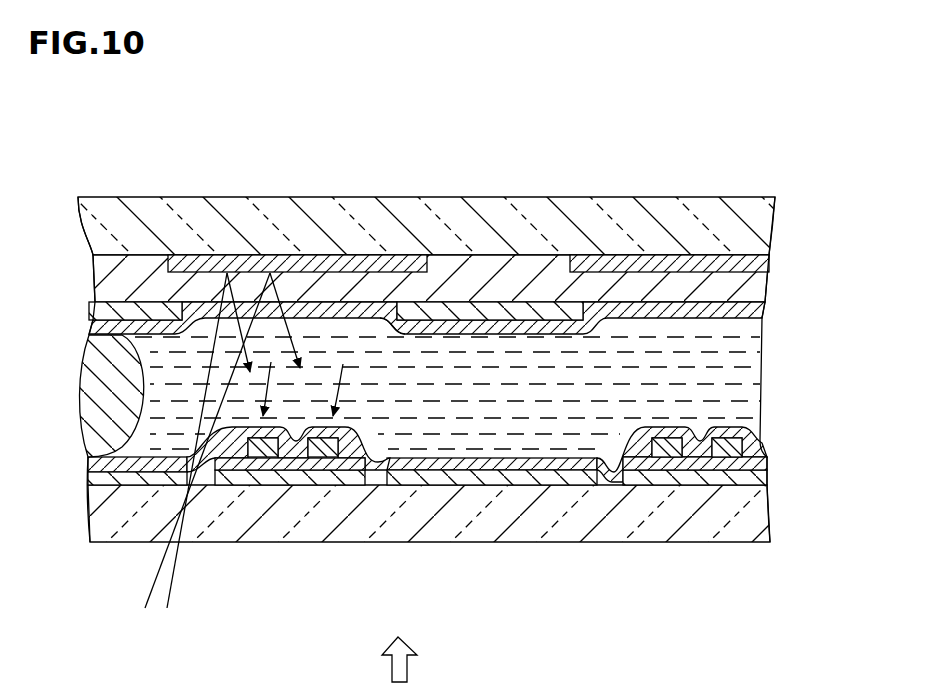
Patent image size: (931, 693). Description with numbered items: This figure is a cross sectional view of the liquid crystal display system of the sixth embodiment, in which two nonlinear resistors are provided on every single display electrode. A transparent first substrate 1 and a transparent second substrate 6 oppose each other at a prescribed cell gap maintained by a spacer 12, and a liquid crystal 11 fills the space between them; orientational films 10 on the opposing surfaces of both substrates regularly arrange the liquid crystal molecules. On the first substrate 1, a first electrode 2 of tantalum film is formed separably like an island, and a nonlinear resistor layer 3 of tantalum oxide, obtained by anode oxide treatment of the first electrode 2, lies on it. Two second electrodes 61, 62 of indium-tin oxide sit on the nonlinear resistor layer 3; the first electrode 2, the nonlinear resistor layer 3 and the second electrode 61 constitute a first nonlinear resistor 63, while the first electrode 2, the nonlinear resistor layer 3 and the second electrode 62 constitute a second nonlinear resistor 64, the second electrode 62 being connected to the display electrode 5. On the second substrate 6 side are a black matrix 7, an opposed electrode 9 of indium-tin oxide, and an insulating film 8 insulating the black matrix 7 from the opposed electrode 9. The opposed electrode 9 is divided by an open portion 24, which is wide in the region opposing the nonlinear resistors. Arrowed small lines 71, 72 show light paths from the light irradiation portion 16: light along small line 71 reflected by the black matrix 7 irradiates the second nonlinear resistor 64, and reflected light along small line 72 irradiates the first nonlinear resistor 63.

The first substrate 1 is at (757, 509).
The first electrode 2 is at (287, 478).
The nonlinear resistor layer 3 is at (360, 474).
The display electrode 5 is at (565, 476).
The second substrate 6 is at (764, 224).
The black matrix 7 is at (303, 257).
The insulating film 8 is at (760, 287).
The opposed electrode 9 is at (538, 333).
The orientational film 10 is at (757, 308).
The liquid crystal 11 is at (752, 373).
The spacer 12 is at (93, 421).
The light irradiation portion 16 is at (408, 668).
The open portion 24 is at (381, 335).
The second electrode 61 is at (265, 456).
The second electrode 62 is at (327, 450).
The first nonlinear resistor 63 is at (270, 377).
The second nonlinear resistor 64 is at (342, 379).
The small line 71 is at (152, 590).
The small line 72 is at (172, 590).